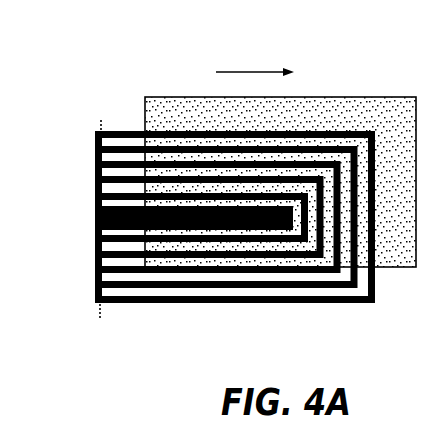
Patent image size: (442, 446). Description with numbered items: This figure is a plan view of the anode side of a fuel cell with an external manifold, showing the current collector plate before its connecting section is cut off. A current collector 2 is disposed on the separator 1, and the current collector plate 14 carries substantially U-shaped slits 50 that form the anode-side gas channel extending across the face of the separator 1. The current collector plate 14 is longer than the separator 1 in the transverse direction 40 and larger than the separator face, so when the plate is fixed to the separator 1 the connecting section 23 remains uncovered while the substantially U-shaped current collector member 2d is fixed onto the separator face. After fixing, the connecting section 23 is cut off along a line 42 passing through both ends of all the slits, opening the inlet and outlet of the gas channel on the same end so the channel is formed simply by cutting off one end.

The separator 1 is at (380, 102).
The current collector 2 is at (224, 237).
The substantially U-shaped current collector member 2d is at (283, 296).
The current collector plate 14 is at (176, 296).
The connecting section 23 is at (86, 178).
The substantially U-shaped slit 50 is at (86, 230).
The line 42 is at (91, 306).
The transverse direction 40 is at (230, 63).